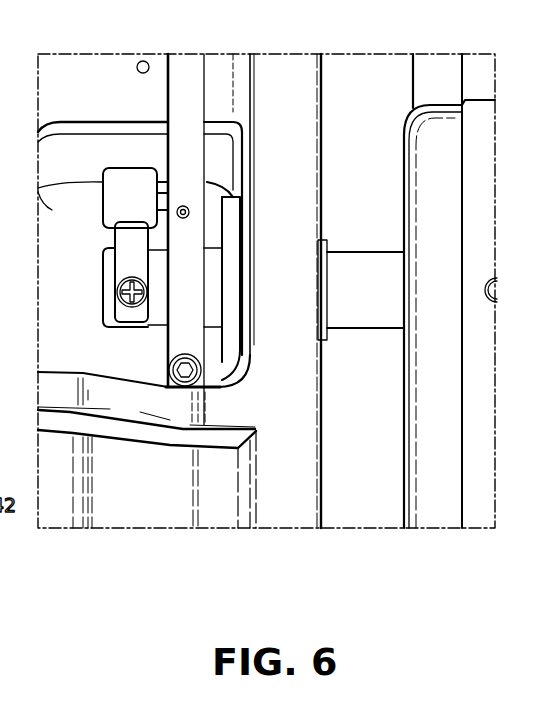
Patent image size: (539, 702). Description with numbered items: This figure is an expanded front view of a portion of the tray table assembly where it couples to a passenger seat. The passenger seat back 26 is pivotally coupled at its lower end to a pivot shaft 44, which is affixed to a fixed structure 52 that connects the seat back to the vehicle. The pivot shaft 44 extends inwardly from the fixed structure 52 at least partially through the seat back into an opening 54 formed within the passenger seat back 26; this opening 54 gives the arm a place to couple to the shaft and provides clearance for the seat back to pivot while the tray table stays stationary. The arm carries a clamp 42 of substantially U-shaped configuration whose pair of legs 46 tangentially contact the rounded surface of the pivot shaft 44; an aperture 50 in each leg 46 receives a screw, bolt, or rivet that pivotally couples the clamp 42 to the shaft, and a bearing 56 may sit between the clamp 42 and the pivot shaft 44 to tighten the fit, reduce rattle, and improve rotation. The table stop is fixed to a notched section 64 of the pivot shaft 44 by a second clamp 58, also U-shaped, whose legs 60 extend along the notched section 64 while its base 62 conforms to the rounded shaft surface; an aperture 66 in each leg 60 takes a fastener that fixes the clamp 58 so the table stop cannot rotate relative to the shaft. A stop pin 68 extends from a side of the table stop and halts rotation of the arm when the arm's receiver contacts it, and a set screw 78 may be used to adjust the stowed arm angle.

The passenger seat back 26 is at (273, 85).
The clamp 42 is at (197, 302).
The pivot shaft 44 is at (360, 277).
The legs 46 is at (178, 330).
The aperture 50 is at (183, 386).
The fixed structure 52 is at (437, 224).
The opening 54 is at (38, 188).
The bearing 56 is at (4, 166).
The clamp 58 is at (127, 258).
The legs 60 is at (120, 266).
The base 62 is at (120, 267).
The notched section 64 is at (0, 372).
The aperture 66 is at (123, 313).
The stop pin 68 is at (160, 200).
The set screw 78 is at (183, 206).